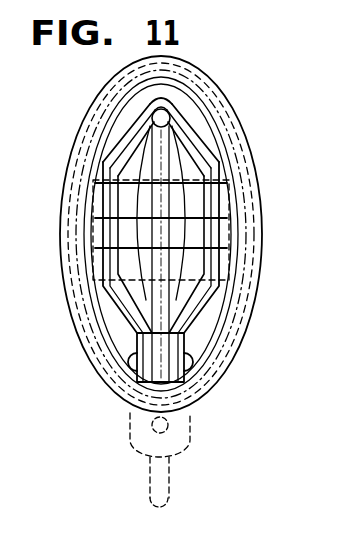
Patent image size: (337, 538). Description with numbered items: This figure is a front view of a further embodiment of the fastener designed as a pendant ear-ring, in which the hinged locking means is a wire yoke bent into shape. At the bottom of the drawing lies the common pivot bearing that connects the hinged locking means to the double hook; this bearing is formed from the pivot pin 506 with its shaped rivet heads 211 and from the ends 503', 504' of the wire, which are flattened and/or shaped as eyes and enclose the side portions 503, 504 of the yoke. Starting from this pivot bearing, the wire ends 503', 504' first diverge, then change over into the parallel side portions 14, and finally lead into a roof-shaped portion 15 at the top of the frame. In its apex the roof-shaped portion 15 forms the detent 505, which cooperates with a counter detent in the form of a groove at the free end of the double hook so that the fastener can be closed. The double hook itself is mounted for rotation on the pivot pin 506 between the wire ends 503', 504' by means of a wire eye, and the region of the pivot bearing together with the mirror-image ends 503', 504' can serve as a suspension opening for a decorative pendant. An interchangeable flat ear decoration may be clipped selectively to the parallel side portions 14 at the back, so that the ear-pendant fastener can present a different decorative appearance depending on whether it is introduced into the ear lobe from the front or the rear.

The detent 505 is at (150, 97).
The side portion 504 is at (92, 136).
The side portion 503 is at (237, 140).
The wire end 504' is at (83, 254).
The wire end 503' is at (241, 247).
The roof-shaped portion 15 is at (184, 122).
The parallel side portions 14 is at (105, 222).
The shaped rivet heads 211 is at (190, 364).
The pivot pin 506 is at (132, 460).